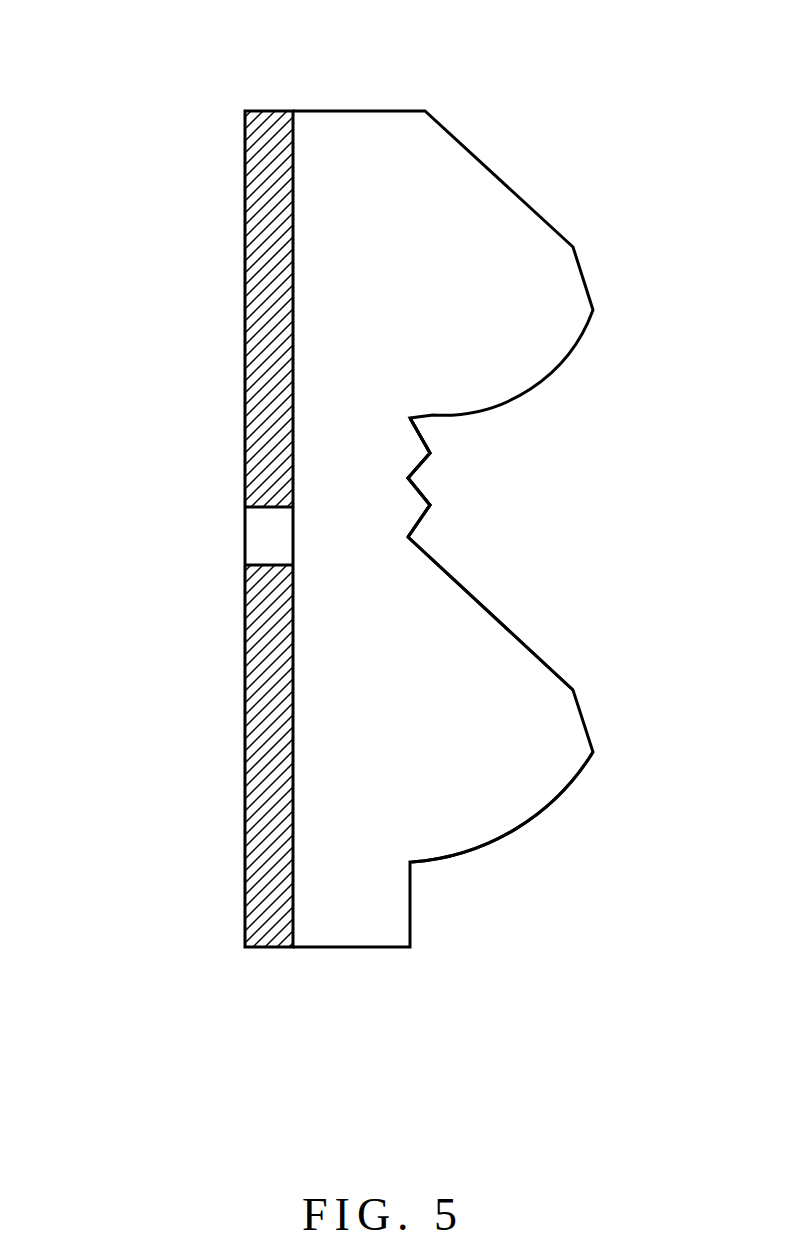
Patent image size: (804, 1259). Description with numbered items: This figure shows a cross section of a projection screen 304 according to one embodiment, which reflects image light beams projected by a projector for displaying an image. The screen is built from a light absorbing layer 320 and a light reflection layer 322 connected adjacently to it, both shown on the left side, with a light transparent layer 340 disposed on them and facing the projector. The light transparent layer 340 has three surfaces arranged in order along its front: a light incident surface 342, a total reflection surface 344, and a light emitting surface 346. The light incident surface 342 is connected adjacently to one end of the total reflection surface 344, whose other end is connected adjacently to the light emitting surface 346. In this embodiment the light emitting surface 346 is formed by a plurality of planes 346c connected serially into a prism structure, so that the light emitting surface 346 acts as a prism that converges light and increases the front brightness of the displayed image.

The projection screen 304 is at (160, 52).
The light absorbing layer 320 is at (263, 938).
The light reflection layer 322 is at (255, 538).
The light transparent layer 340 is at (370, 938).
The light incident surface 342 is at (578, 783).
The total reflection surface 344 is at (542, 657).
The light emitting surface 346 is at (658, 422).
The planes 346c is at (423, 434).